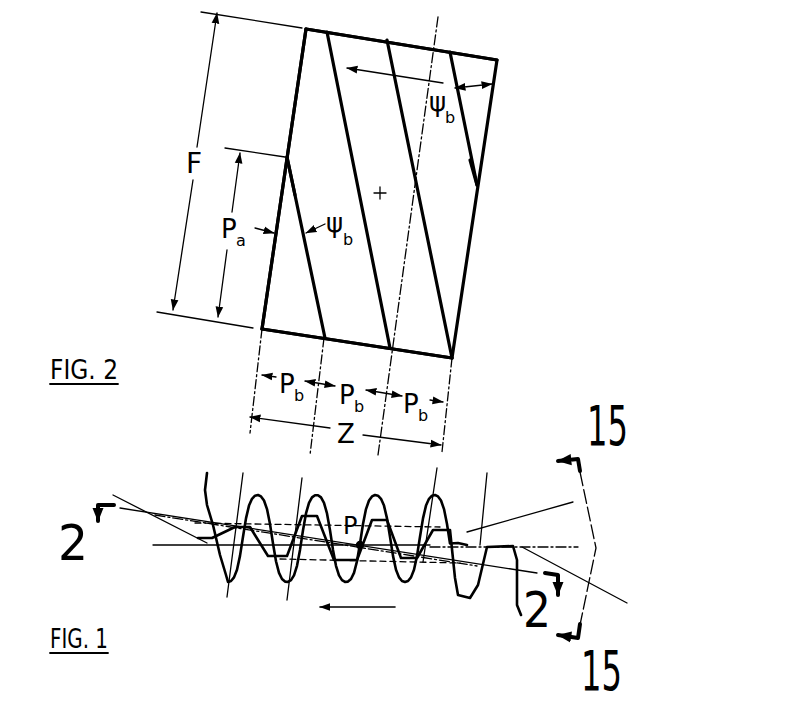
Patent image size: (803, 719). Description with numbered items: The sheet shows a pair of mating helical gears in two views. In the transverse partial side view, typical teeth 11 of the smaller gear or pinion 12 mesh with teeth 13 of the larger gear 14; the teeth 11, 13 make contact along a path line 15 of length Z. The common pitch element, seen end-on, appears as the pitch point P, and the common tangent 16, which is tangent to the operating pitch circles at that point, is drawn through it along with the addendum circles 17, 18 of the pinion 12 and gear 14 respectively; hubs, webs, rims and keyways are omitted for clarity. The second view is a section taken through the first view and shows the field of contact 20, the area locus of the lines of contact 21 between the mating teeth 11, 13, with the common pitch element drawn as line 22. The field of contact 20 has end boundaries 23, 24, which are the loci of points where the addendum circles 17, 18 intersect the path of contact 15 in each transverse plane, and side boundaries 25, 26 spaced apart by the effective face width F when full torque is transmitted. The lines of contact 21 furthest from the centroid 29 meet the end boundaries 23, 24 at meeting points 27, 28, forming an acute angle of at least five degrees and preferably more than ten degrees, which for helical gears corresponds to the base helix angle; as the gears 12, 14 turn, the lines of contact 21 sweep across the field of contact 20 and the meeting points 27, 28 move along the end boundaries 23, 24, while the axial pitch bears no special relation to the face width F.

In FIG. 1, the teeth 11 is at (237, 568).
In FIG. 1, the smaller gear (pinion) 12 is at (295, 627).
In FIG. 1, the teeth 13 is at (210, 547).
In FIG. 1, the larger gear 14 is at (430, 482).
In FIG. 1, the path line (path of contact) 15 is at (427, 565).
In FIG. 1, the common tangent 16 is at (548, 543).
In FIG. 1, the addendum circle 17 is at (567, 565).
In FIG. 1, the addendum circle 18 is at (558, 507).
In FIG. 2, the field of contact 20 is at (480, 100).
In FIG. 2, the lines of contact 21 is at (470, 128).
In FIG. 2, the common pitch element 22 is at (440, 28).
In FIG. 2, the end boundary 23 is at (488, 128).
In FIG. 2, the end boundary 24 is at (303, 52).
In FIG. 2, the side boundary 25 is at (488, 43).
In FIG. 2, the side boundary 26 is at (452, 360).
In FIG. 2, the meeting point 27 is at (478, 187).
In FIG. 2, the meeting point 28 is at (287, 157).
In FIG. 2, the centroid 29 is at (380, 191).